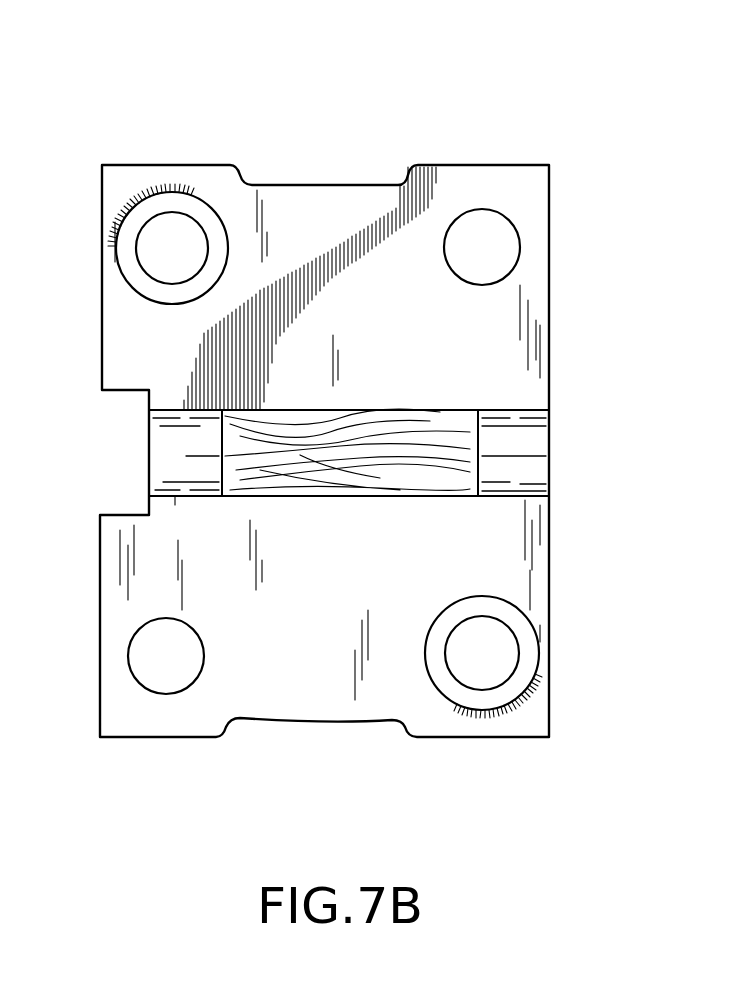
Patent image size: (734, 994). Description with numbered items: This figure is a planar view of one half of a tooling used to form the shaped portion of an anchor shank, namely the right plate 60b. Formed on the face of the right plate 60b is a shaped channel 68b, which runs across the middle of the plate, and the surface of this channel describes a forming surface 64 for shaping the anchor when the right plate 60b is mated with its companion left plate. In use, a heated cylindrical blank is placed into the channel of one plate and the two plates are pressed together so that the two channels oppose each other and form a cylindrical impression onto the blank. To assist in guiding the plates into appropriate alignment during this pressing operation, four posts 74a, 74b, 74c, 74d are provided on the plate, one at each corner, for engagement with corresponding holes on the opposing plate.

The right plate 60b is at (329, 148).
The forming surface 64 is at (378, 411).
The shaped channel 68b is at (431, 408).
The post 74a is at (164, 694).
The post 74b is at (143, 214).
The post 74c is at (510, 211).
The post 74d is at (488, 690).